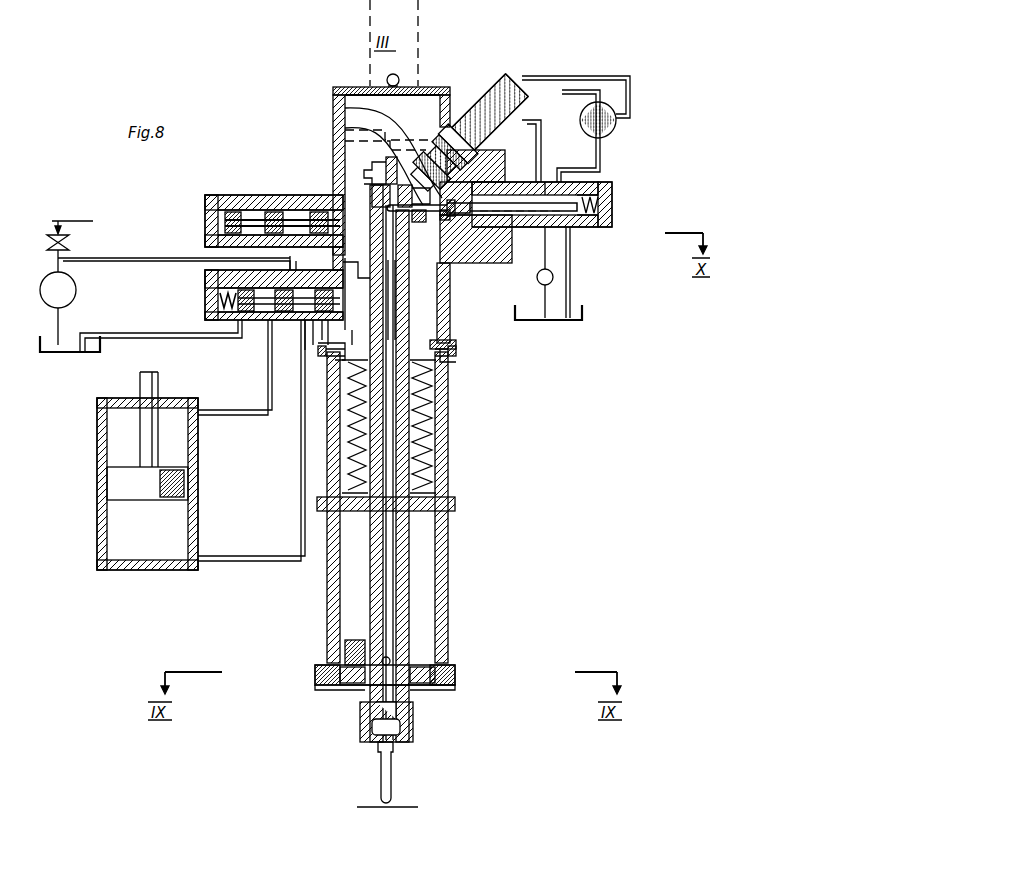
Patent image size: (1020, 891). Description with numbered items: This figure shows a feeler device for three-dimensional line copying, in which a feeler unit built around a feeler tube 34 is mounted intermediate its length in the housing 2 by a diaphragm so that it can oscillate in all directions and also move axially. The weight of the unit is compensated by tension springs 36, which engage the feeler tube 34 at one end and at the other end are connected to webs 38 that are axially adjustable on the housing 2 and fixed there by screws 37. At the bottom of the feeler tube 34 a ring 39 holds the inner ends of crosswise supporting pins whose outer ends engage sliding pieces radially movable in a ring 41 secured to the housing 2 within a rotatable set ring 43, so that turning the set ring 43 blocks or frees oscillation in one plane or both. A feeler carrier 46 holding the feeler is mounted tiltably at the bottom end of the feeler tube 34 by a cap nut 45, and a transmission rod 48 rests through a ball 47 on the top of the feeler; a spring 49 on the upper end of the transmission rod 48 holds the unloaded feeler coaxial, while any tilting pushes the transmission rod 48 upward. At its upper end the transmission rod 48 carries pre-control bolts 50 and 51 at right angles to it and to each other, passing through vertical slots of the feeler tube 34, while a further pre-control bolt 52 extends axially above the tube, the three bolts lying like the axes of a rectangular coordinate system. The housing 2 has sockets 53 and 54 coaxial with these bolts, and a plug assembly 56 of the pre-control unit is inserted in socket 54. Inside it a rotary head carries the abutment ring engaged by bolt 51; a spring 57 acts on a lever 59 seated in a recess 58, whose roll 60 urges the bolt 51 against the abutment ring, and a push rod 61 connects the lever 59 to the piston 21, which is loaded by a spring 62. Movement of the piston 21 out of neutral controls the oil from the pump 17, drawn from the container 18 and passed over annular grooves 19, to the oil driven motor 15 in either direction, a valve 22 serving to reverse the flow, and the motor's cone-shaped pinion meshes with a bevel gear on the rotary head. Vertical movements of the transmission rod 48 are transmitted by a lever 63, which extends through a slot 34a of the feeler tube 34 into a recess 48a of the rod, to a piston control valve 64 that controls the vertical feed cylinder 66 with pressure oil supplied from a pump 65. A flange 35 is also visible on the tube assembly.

The housing 2 is at (448, 402).
The oil driven motor 15 is at (485, 95).
The precontrol pump 17 is at (540, 270).
The container 18 is at (555, 318).
The annular grooves 19 is at (416, 218).
The pre-control piston 21 is at (590, 182).
The four-way valve 22 is at (616, 122).
The feeler tube 34 is at (409, 550).
The slot 34a is at (343, 282).
The flange 35 is at (455, 517).
The tension springs 36 is at (425, 446).
The screws 37 is at (456, 351).
The webs 38 is at (436, 342).
The ring 39 is at (368, 666).
The ring 41 is at (440, 690).
The set ring 43 is at (455, 678).
The cap nut 45 is at (360, 725).
The feeler carrier 46 is at (395, 728).
The ball 47 is at (392, 664).
The transmission rod 48 is at (393, 590).
The recess 48a is at (398, 278).
The spring 49 is at (372, 192).
The pre-control bolt 50 is at (398, 200).
The pre-control bolt 51 is at (392, 209).
The pre-control bolt 52 is at (386, 168).
The socket 53 is at (365, 100).
The socket 54 is at (452, 270).
The plug assembly 56 is at (612, 184).
The spring 57 is at (470, 235).
The recess 58 is at (488, 182).
The lever 59 is at (355, 108).
The roll 60 is at (346, 130).
The push rod 61 is at (560, 226).
The spring 62 is at (598, 206).
The lever 63 is at (330, 325).
The piston control valve 64 is at (236, 318).
The pump 65 is at (72, 298).
The feed cylinder 66 is at (97, 512).